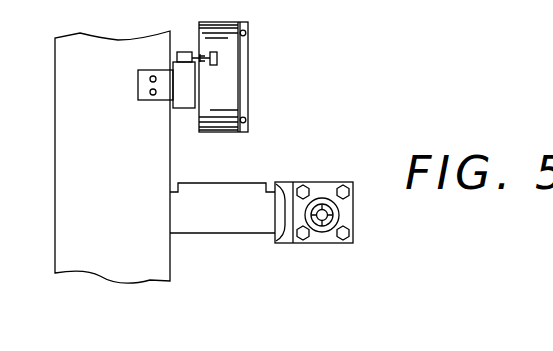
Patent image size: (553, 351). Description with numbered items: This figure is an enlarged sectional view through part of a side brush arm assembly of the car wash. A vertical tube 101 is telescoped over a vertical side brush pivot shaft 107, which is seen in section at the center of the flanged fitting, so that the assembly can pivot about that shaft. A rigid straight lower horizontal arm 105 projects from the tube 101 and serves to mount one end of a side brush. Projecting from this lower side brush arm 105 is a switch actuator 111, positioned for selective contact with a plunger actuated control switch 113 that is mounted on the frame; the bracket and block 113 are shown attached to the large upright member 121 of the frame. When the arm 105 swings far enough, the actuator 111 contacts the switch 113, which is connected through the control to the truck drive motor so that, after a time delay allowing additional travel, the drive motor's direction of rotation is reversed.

The vertical tube 101 is at (339, 218).
The lower horizontal arm 105 is at (265, 195).
The side brush pivot shaft 107 is at (325, 203).
The switch actuator 111 is at (250, 42).
The plunger actuated control switch 113 is at (187, 52).
The column 121 is at (58, 0).